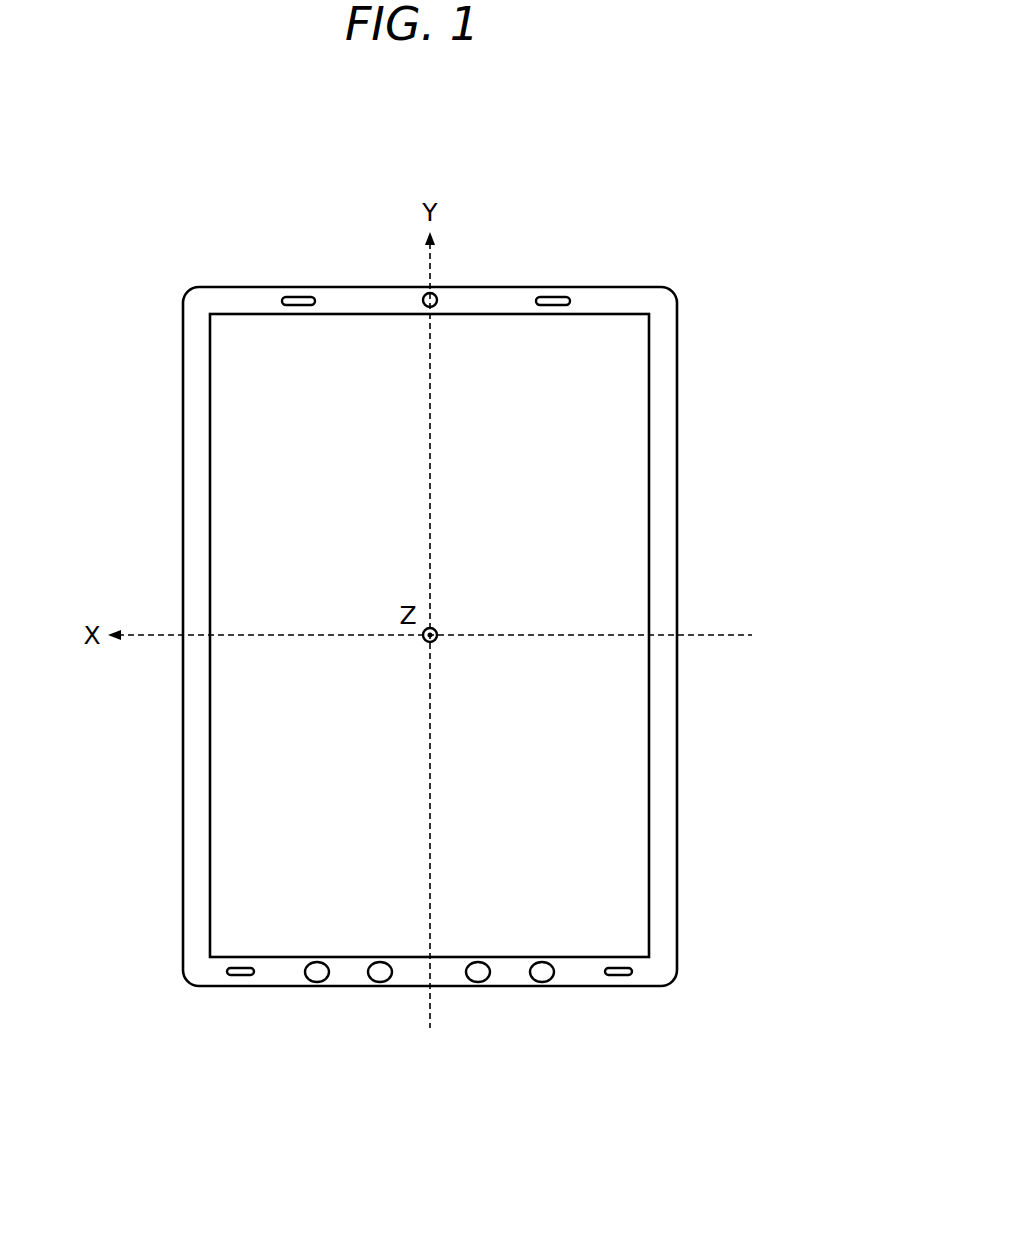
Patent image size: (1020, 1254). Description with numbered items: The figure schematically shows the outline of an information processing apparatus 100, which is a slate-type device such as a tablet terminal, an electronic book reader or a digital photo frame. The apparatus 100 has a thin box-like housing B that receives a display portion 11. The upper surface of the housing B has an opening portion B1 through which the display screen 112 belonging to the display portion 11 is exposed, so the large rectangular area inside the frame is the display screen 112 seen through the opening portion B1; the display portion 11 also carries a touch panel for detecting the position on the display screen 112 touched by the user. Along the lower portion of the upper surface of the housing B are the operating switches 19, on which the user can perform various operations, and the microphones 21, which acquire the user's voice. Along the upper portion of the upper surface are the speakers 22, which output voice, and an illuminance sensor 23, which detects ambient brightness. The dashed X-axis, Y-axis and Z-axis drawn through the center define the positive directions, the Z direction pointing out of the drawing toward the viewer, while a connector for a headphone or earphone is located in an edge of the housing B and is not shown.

The information processing apparatus 100 is at (718, 265).
The display portion 11 is at (650, 543).
The display screen 112 is at (598, 712).
The housing B is at (677, 430).
The opening portion B1 is at (650, 372).
The speakers 22 is at (300, 297).
The illuminance sensor 23 is at (437, 298).
The operating switches 19 is at (298, 980).
The microphones 21 is at (241, 977).